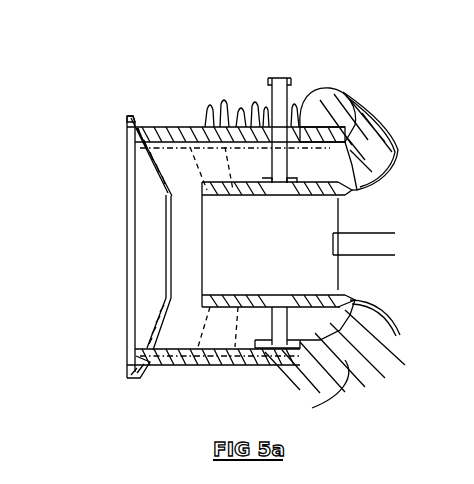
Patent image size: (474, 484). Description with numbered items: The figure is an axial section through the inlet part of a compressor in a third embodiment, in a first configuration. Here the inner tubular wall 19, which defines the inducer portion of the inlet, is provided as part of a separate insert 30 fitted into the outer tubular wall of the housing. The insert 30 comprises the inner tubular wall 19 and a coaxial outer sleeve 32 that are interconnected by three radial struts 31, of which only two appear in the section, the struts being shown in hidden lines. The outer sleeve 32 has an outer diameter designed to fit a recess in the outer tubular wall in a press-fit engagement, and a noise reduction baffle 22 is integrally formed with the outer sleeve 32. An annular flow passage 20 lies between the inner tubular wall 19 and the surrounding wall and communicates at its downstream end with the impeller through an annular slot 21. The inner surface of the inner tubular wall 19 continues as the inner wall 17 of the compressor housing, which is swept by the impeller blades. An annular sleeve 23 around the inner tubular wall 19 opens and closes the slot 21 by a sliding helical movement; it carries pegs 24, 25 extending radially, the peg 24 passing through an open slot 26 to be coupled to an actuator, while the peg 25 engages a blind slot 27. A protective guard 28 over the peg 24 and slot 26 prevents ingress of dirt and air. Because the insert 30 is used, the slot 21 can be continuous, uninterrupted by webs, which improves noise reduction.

The inner wall of the compressor housing 17 is at (392, 150).
The inner tubular wall 19 is at (225, 197).
The annular flow passage 20 is at (190, 326).
The annular slot 21 is at (345, 186).
The noise reduction baffle 22 is at (160, 188).
The annular sleeve 23 is at (355, 303).
The peg 24 is at (277, 82).
The peg 25 is at (272, 345).
The open slot 26 is at (296, 130).
The blind slot 27 is at (262, 333).
The protective guard 28 is at (248, 112).
The insert 30 is at (133, 148).
The radial strut 31 is at (214, 160).
The outer sleeve 32 is at (158, 135).